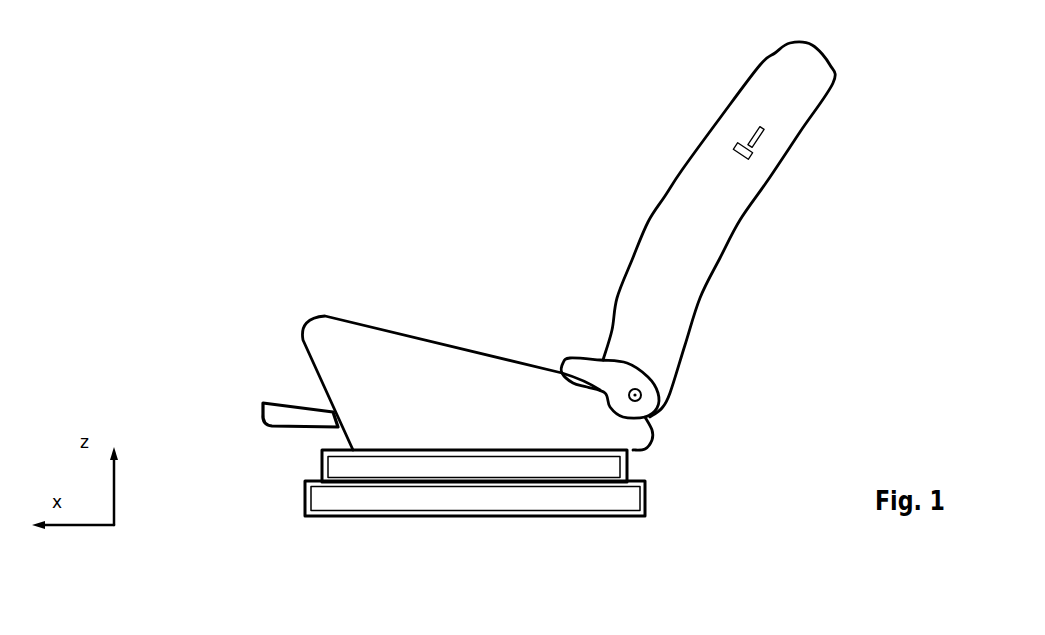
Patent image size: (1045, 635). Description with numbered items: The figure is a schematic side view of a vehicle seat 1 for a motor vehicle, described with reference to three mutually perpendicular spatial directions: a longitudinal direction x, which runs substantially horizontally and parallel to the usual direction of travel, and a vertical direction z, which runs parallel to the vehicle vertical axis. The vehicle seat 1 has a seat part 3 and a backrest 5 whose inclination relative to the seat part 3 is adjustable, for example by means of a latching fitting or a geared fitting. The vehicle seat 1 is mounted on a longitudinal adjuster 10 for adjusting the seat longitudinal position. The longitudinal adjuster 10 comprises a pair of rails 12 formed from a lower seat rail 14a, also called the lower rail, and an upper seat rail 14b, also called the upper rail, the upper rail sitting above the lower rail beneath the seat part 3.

The vehicle seat 1 is at (378, 105).
The seat part 3 is at (437, 373).
The backrest 5 is at (687, 183).
The longitudinal adjuster 10 is at (269, 480).
The pair of rails 12 is at (546, 459).
The lower seat rail 14a is at (605, 500).
The upper seat rail 14b is at (603, 468).